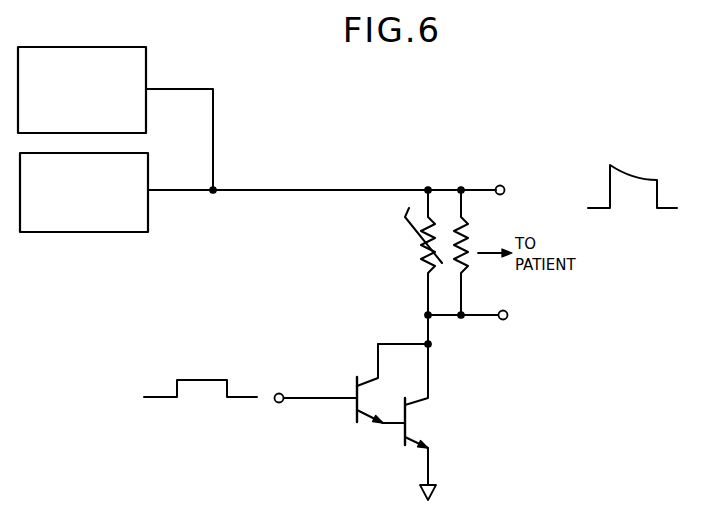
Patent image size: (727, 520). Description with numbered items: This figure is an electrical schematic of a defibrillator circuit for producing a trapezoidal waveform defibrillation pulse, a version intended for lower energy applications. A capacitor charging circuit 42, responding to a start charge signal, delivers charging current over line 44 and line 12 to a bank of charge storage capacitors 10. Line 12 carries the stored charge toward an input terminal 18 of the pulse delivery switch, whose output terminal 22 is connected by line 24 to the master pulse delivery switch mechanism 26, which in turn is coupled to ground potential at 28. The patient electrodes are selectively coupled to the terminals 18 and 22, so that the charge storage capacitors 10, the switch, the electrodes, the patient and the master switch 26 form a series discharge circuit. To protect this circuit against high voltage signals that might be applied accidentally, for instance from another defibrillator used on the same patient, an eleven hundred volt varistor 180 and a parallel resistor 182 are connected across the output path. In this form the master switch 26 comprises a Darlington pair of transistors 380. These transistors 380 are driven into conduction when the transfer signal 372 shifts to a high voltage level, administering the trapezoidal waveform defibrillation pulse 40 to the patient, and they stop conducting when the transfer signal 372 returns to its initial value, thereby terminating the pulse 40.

The charge storage capacitors 10 is at (72, 233).
The line 12 is at (306, 190).
The input terminal 18 is at (504, 186).
The output terminal 22 is at (510, 313).
The line 24 is at (428, 333).
The master pulse delivery switch mechanism 26 is at (455, 408).
The ground potential 28 is at (437, 493).
The trapezoidal waveform defibrillation pulse 40 is at (610, 192).
The capacitor charging circuit 42 is at (146, 63).
The line 44 is at (213, 128).
The varistor 180 is at (418, 243).
The parallel resistor 182 is at (470, 230).
The transfer signal 372 is at (200, 380).
The Darlington pair of transistors 380 is at (360, 441).